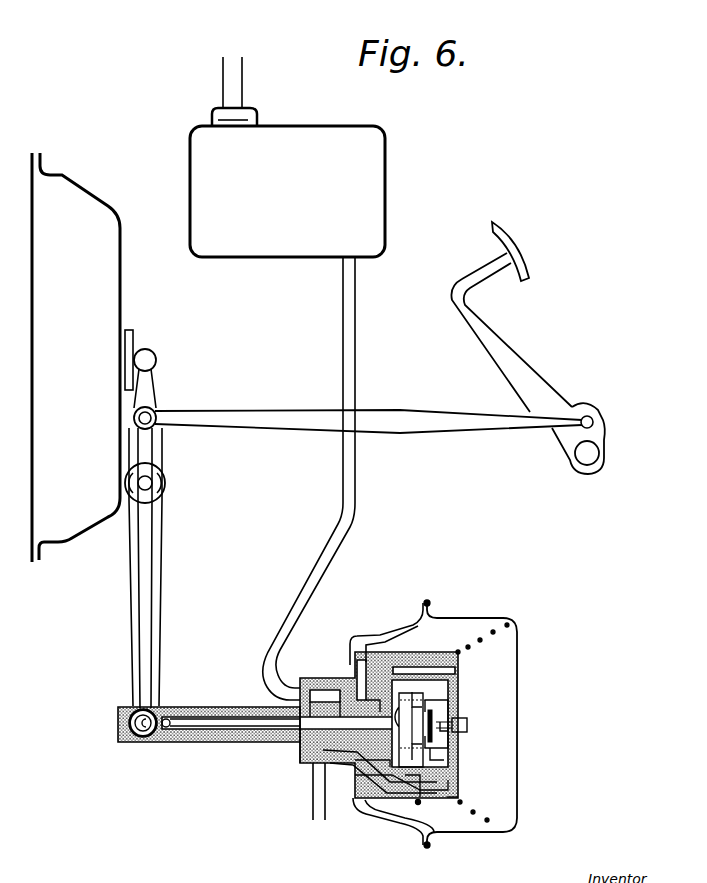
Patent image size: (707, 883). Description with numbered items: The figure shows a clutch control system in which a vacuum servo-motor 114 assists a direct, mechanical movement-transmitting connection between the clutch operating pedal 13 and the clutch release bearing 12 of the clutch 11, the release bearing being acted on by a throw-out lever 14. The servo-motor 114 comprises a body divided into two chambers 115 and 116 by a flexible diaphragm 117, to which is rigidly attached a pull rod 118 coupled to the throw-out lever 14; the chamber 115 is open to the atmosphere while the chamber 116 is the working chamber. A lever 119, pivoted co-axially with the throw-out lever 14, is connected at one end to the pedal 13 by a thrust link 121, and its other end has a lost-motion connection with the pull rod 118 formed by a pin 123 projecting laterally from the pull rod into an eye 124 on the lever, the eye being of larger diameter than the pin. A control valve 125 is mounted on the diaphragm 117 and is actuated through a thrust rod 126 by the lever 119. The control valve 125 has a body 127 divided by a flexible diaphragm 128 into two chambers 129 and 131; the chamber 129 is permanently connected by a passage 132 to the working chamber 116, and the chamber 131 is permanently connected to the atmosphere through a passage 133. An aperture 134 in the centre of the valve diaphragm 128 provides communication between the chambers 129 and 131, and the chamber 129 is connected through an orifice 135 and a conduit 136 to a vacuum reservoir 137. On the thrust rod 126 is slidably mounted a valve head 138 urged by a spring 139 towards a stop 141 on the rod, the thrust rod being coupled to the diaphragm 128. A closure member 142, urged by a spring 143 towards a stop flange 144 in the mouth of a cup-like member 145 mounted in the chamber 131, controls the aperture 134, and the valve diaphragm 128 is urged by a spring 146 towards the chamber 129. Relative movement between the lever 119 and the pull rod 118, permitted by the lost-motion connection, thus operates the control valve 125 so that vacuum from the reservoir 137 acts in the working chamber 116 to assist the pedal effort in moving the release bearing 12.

The clutch 11 is at (76, 357).
The clutch release bearing 12 is at (141, 338).
The clutch operating pedal 13 is at (496, 344).
The throw-out lever 14 is at (156, 385).
The servo-motor 114 is at (466, 608).
The chamber 115 is at (397, 823).
The chamber 116 is at (507, 807).
The flexible diaphragm 117 is at (385, 650).
The pull rod 118 is at (205, 708).
The lever 119 is at (160, 532).
The thrust link 121 is at (416, 410).
The pin 123 is at (128, 714).
The eye 124 is at (125, 727).
The control valve 125 is at (457, 703).
The thrust rod 126 is at (206, 741).
The body 127 is at (448, 800).
The flexible diaphragm 128 is at (452, 771).
The chamber 129 is at (368, 795).
The chamber 131 is at (471, 684).
The passage 132 is at (420, 673).
The passage 133 is at (423, 800).
The aperture 134 is at (333, 768).
The orifice 135 is at (313, 748).
The conduit 136 is at (344, 330).
The vacuum reservoir 137 is at (287, 157).
The valve head 138 is at (350, 678).
The spring 139 is at (368, 634).
The stop 141 is at (348, 697).
The closure member 142 is at (468, 708).
The spring 143 is at (450, 735).
The stop flange 144 is at (440, 683).
The cup-like member 145 is at (443, 706).
The spring 146 is at (455, 757).